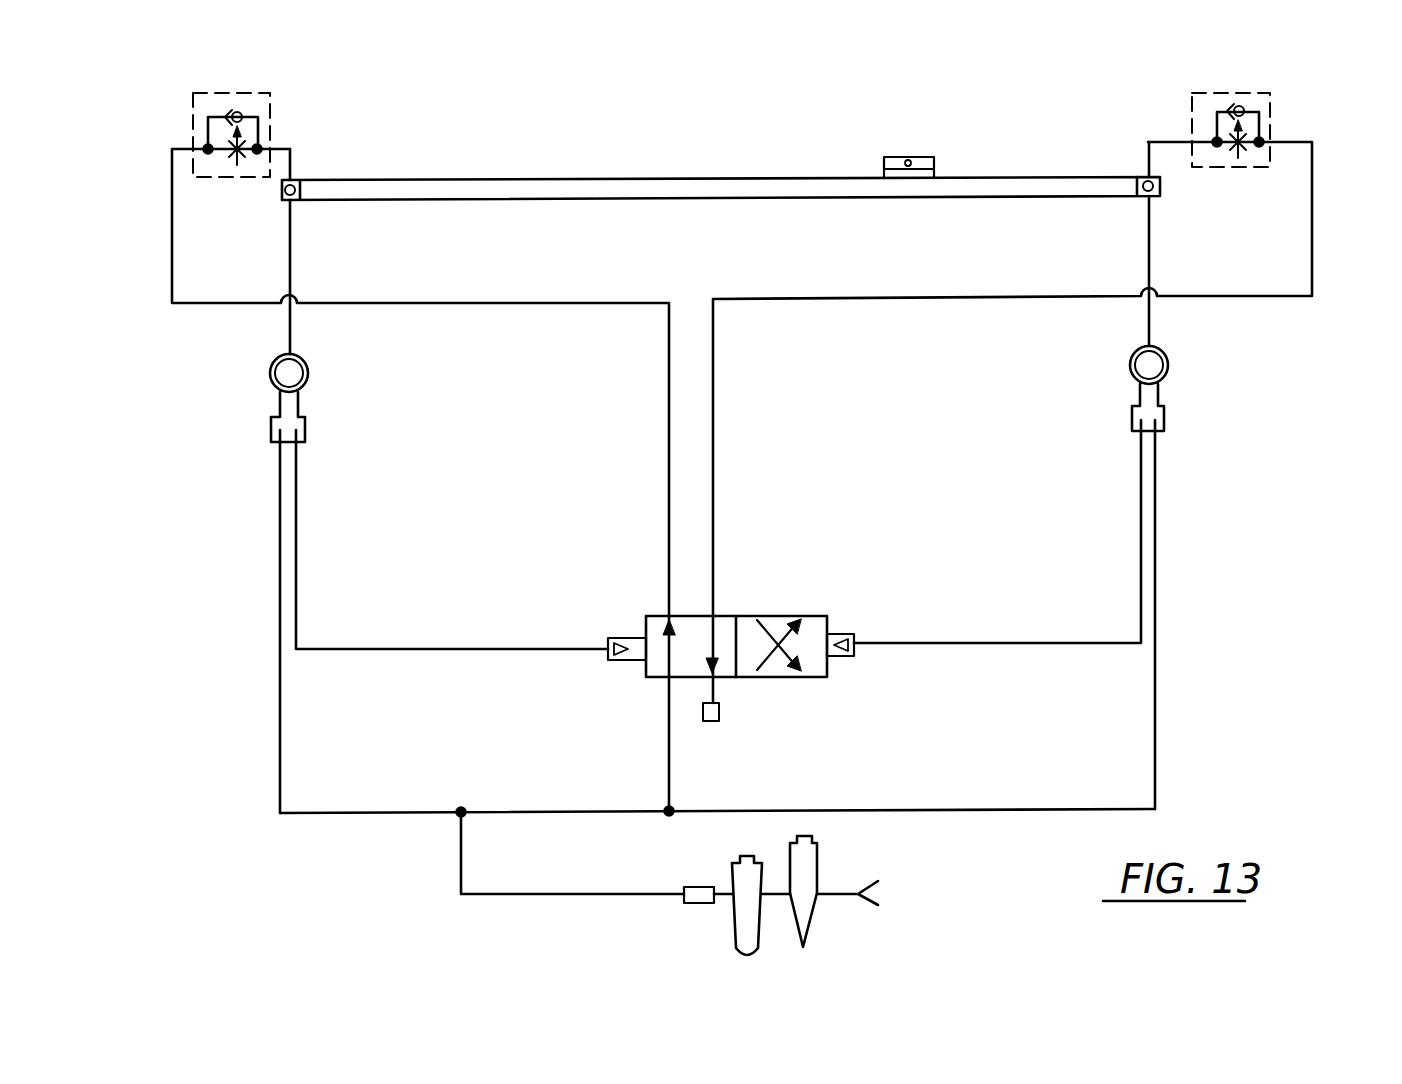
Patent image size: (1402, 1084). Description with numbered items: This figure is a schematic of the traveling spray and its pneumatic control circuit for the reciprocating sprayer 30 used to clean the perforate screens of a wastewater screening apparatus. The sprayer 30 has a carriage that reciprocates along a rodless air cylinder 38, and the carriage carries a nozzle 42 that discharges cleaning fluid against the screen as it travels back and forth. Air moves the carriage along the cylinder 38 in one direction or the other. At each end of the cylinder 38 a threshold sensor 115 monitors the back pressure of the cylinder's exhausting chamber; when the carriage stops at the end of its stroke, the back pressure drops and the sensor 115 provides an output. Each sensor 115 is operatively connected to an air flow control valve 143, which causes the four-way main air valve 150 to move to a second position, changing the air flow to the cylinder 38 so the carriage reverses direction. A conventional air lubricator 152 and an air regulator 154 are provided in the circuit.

The reciprocating sprayer 30 is at (721, 177).
The rodless air cylinder 38 is at (778, 196).
The nozzle 42 is at (909, 160).
The threshold sensor 115 is at (268, 372).
The air flow control valve 143 is at (193, 110).
The four-way main air valve 150 is at (827, 616).
The air lubricator 152 is at (730, 867).
The air regulator 154 is at (817, 867).